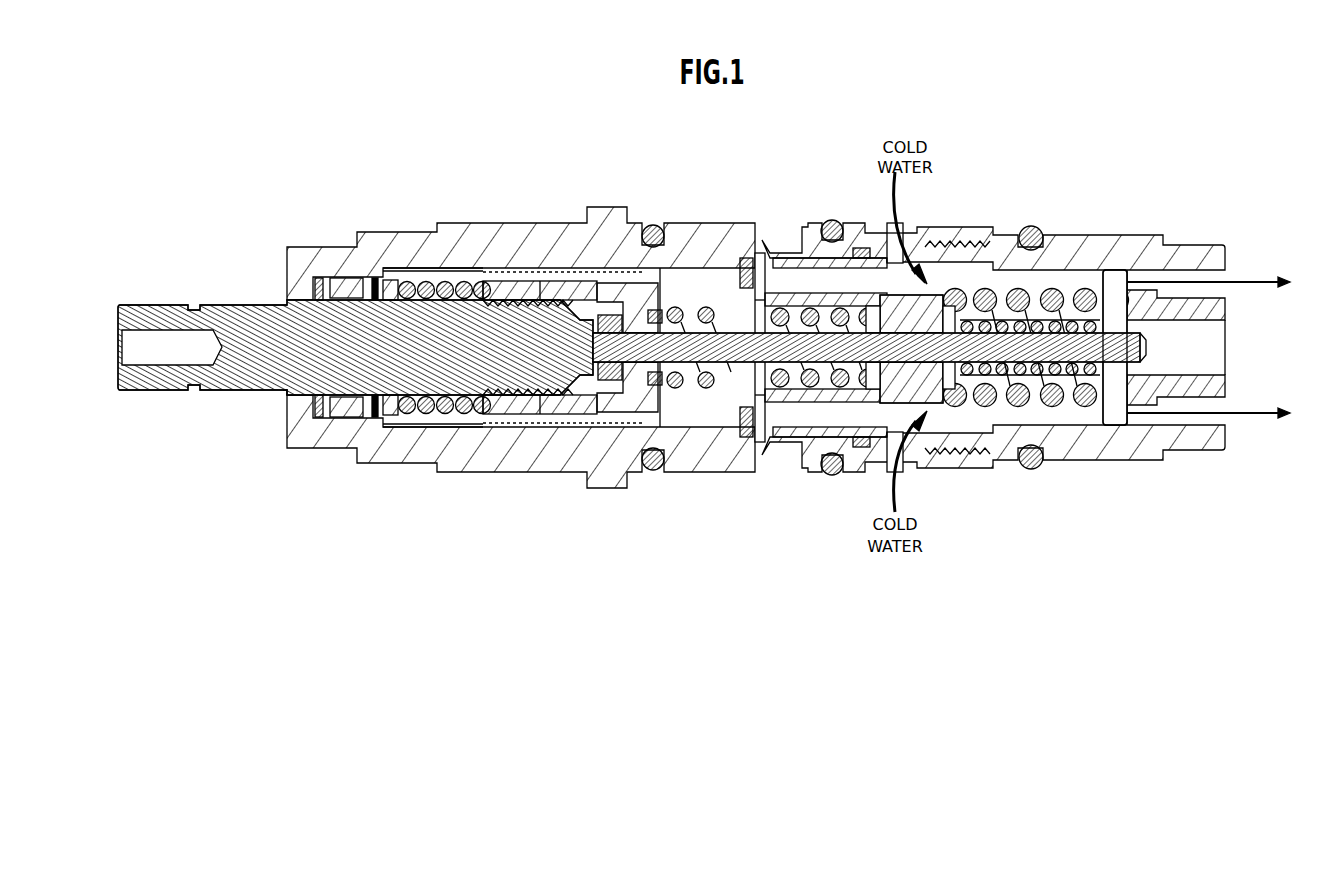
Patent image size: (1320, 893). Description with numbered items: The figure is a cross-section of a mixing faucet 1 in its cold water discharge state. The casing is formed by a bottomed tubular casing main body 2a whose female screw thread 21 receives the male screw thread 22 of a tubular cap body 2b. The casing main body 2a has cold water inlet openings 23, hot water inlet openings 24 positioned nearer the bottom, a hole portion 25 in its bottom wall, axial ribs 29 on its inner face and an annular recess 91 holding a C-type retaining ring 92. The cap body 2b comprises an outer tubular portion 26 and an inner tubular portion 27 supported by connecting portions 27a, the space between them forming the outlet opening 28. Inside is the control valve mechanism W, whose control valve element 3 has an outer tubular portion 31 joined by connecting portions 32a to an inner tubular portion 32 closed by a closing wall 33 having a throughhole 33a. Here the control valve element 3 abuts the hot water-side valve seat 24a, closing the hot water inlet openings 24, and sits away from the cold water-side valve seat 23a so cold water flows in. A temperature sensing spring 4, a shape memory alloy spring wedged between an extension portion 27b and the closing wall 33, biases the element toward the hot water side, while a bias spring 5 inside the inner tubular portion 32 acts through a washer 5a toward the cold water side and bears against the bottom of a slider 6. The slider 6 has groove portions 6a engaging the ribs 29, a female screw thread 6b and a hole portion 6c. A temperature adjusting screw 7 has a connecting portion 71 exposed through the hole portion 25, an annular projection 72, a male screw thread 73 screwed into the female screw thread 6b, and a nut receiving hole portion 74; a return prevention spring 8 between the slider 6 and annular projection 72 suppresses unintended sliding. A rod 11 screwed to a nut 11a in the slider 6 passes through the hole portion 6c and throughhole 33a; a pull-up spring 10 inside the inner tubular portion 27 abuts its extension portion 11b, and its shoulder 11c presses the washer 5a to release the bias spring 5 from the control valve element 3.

The mixing faucet 1 is at (717, 294).
The casing main body 2a is at (521, 378).
The cap body 2b is at (993, 365).
The control valve element 3 is at (824, 421).
The temperature sensing spring 4 is at (1051, 404).
The bias spring 5 is at (699, 408).
The washer 5a is at (954, 292).
The slider 6 is at (565, 403).
The groove portions 6a is at (495, 404).
The female screw thread 6b is at (537, 404).
The hole portion 6c is at (635, 393).
The temperature adjusting screw 7 is at (355, 408).
The return prevention spring 8 is at (431, 392).
The pull-up spring 10 is at (989, 412).
The rod 11 is at (923, 347).
The nut 11a is at (621, 433).
The extension portion 11b is at (1148, 305).
The shoulder 11c is at (884, 427).
The female screw thread 21 is at (957, 380).
The male screw thread 22 is at (957, 483).
The cold water inlet openings 23 is at (916, 342).
The cold water-side valve seat 23a is at (869, 208).
The hot water inlet openings 24 is at (772, 310).
The hot water-side valve seat 24a is at (776, 409).
The hole portion 25 is at (275, 410).
The outer tubular portion 26 is at (1176, 383).
The inner tubular portion 27 is at (1108, 353).
The connecting portions 27a is at (1079, 419).
The extension portion 27b is at (1059, 447).
The outlet opening 28 is at (1203, 335).
The ribs 29 is at (668, 324).
The outer tubular portion 31 is at (831, 438).
The inner tubular portion 32 is at (826, 290).
The connecting portions 32a is at (830, 312).
The closing wall 33 is at (902, 399).
The throughhole 33a is at (1002, 325).
The connecting portion 71 is at (159, 324).
The annular projection 72 is at (339, 386).
The male screw thread 73 is at (528, 285).
The nut receiving hole portion 74 is at (589, 278).
The annular recess 91 is at (779, 233).
The C-type retaining ring 92 is at (779, 463).
The control valve mechanism W is at (962, 223).